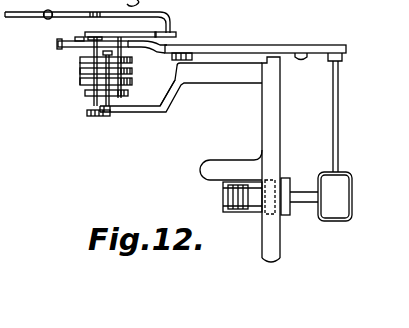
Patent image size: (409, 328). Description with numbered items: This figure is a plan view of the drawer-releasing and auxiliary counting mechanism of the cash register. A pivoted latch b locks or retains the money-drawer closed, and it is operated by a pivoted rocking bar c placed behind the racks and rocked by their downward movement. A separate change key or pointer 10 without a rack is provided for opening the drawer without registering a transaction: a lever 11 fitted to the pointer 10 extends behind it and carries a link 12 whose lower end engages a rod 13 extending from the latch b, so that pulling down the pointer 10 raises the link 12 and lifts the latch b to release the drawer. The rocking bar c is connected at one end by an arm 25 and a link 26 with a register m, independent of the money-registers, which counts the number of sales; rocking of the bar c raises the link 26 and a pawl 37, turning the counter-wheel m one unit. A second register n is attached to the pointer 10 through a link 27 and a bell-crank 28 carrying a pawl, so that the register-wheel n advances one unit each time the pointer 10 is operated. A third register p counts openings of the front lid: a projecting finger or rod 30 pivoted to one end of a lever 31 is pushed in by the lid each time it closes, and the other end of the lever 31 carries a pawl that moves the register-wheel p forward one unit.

The projecting finger or rod 30 is at (87, 16).
The lever 31 is at (176, 35).
The bell-crank 28 is at (115, 31).
The pointer 10 is at (113, 53).
The link 27 is at (147, 50).
The lever 11 is at (255, 40).
The link 12 is at (318, 70).
The rod 13 is at (352, 116).
The latch b is at (326, 196).
The rocking bar c is at (246, 159).
The arm 25 is at (181, 87).
The link 26 is at (179, 99).
The pawl 37 is at (125, 120).
The register m is at (98, 121).
The register n is at (113, 71).
The register p is at (80, 80).